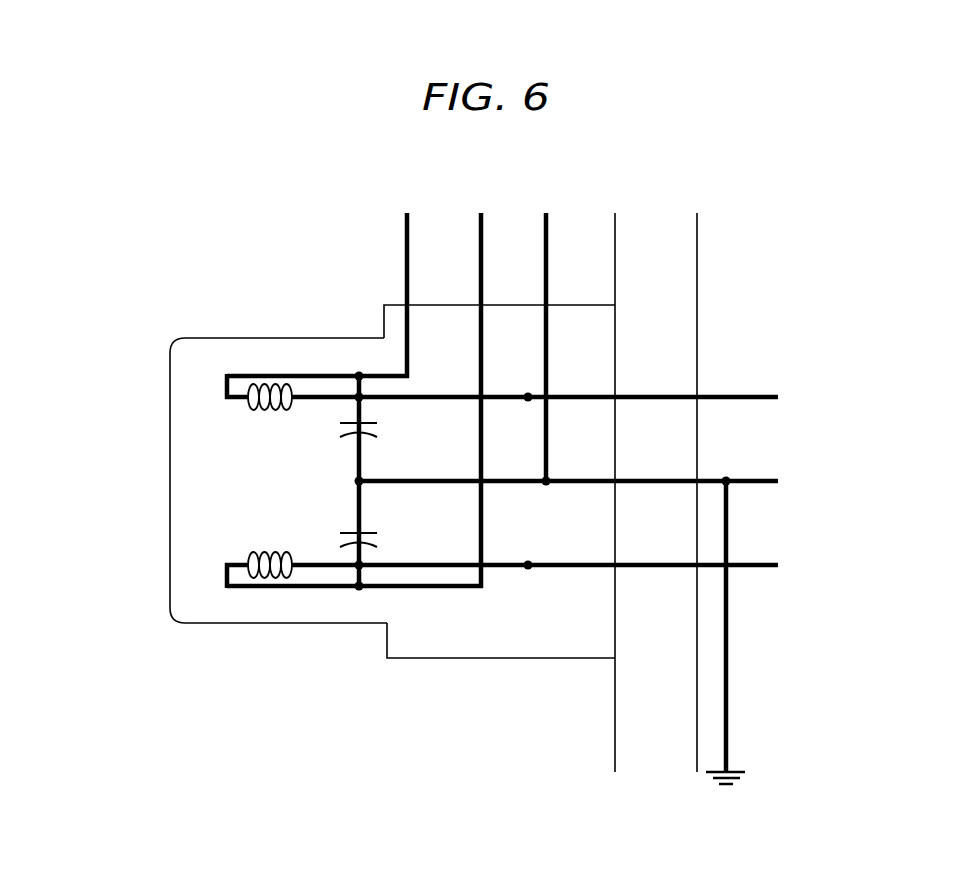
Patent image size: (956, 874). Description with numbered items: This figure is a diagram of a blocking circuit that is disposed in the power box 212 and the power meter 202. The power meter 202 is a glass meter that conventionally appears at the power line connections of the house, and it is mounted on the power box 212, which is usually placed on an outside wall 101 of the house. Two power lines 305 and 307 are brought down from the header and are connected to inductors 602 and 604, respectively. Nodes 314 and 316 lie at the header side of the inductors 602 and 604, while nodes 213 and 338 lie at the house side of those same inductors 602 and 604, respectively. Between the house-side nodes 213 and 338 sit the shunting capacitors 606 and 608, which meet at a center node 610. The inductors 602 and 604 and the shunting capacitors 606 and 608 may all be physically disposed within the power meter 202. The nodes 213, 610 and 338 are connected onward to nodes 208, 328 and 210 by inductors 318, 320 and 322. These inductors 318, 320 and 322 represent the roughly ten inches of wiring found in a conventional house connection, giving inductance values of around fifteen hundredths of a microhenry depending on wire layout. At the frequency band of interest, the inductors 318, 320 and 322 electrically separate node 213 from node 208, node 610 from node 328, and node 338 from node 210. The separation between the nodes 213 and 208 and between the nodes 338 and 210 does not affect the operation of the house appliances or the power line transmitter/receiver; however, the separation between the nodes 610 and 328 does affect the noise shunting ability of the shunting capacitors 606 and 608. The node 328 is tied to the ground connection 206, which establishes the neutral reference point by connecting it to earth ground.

The outside wall 101 is at (615, 355).
The power meter 202 is at (170, 415).
The ground connection 206 is at (726, 667).
The node 208 is at (528, 397).
The node 210 is at (528, 565).
The power box 212 is at (425, 660).
The node 213 is at (360, 392).
The power line 305 is at (407, 262).
The power line 307 is at (481, 242).
The node 314 is at (359, 376).
The node 316 is at (359, 586).
The inductor 318 is at (435, 397).
The inductor 320 is at (437, 481).
The inductor 322 is at (425, 565).
The node 328 is at (546, 481).
The node 338 is at (355, 570).
The inductor 602 is at (240, 400).
The inductor 604 is at (240, 565).
The shunting capacitor 606 is at (342, 421).
The shunting capacitor 608 is at (342, 532).
The node 610 is at (359, 481).